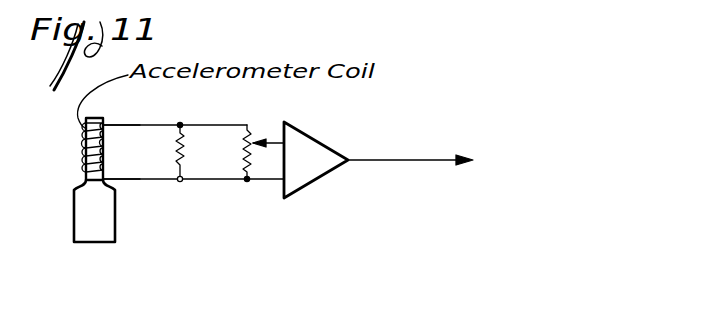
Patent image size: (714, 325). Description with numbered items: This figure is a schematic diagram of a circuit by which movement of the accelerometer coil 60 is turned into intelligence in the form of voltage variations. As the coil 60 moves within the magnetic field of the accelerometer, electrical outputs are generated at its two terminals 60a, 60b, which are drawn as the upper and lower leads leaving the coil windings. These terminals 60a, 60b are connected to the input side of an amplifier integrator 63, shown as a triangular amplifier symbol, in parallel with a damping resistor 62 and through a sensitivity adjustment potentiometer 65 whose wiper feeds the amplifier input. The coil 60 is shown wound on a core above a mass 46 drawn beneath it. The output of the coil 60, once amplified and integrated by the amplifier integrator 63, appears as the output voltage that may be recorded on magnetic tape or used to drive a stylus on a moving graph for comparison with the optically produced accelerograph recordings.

The coil 60 is at (80, 150).
The terminal 60a is at (106, 124).
The terminal 60b is at (104, 178).
The resistor 62 is at (255, 99).
The amplifier integrator 63 is at (312, 148).
The potentiometer 65 is at (250, 158).
The mass 46 is at (95, 231).